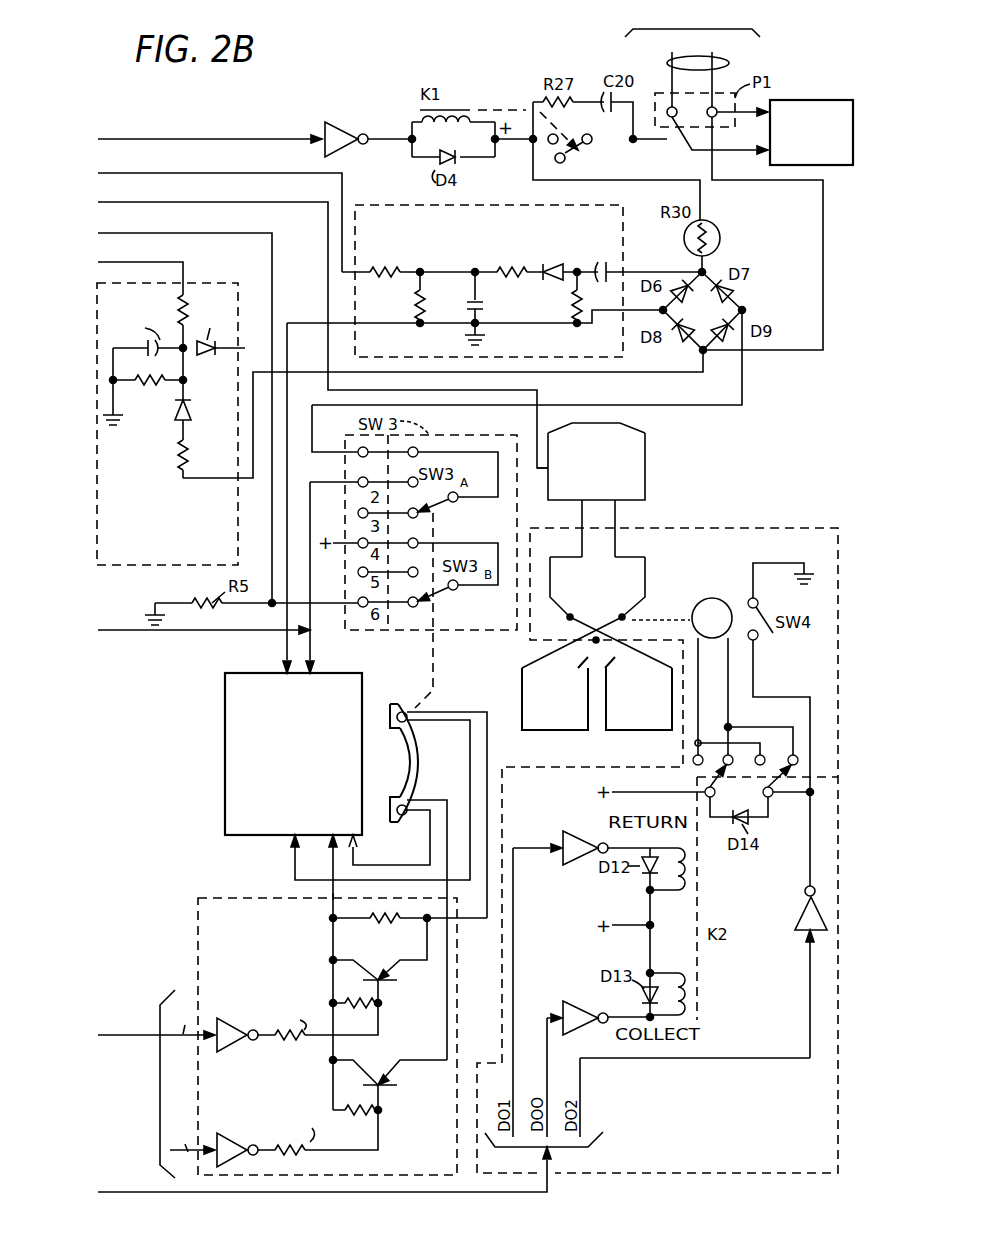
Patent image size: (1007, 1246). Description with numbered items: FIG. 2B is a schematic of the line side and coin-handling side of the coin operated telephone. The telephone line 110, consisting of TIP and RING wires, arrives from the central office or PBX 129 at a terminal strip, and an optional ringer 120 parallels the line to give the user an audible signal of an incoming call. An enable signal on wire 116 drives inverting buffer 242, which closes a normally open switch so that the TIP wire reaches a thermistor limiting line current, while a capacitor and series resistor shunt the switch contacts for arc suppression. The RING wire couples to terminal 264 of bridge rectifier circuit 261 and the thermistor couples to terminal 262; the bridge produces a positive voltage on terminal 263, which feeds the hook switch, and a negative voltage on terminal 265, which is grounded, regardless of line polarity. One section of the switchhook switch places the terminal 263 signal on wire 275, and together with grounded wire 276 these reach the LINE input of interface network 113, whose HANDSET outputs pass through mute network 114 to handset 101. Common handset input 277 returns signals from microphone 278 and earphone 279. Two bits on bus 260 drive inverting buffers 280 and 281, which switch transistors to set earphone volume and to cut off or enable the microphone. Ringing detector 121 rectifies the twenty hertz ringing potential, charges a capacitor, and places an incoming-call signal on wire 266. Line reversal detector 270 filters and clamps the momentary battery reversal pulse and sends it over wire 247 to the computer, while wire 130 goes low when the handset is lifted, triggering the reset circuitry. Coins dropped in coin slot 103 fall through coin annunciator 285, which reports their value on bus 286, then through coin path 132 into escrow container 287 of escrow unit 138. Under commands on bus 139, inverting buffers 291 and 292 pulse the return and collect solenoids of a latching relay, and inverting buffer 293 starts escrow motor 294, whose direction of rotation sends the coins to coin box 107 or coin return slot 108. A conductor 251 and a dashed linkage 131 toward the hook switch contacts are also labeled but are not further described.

The wire 116 is at (170, 134).
The inverting buffer 242 is at (330, 122).
The wire 266 is at (177, 175).
The bus 286 is at (179, 205).
The wire 130 is at (176, 236).
The wire 247 is at (174, 265).
The ringing detector 121 is at (401, 206).
The central office or PBX 129 is at (707, 27).
The telephone line 110 is at (729, 63).
The ringer 120 is at (836, 100).
The terminal 262 is at (707, 271).
The terminal 265 is at (646, 302).
The terminal 263 is at (748, 309).
The terminal 264 is at (708, 352).
The bridge rectifier circuit 261 is at (715, 312).
The line reversal detector 270 is at (175, 566).
The conductor 251 is at (152, 632).
The wire 276 is at (287, 648).
The wire 275 is at (315, 648).
The hook switch linkage 131 is at (437, 667).
The interface network 113 is at (225, 730).
The earphone 279 is at (397, 713).
The microphone 278 is at (394, 827).
The handset 101 is at (408, 780).
The common handset input 277 is at (330, 893).
The mute network 114 is at (332, 1020).
The inverting buffer 280 is at (233, 1020).
The inverting buffer 281 is at (233, 1135).
The bus 260 is at (153, 1030).
The bus 139 is at (152, 1192).
The escrow unit 138 is at (736, 526).
The coin slot 103 is at (625, 430).
The coin annunciator 285 is at (645, 478).
The coin path 132 is at (623, 518).
The escrow container 287 is at (663, 545).
The coin box 107 is at (565, 733).
The coin return slot 108 is at (655, 733).
The escrow motor 294 is at (727, 585).
The inverting buffer 293 is at (797, 922).
The inverting buffer 291 is at (572, 831).
The inverting buffer 292 is at (575, 1000).